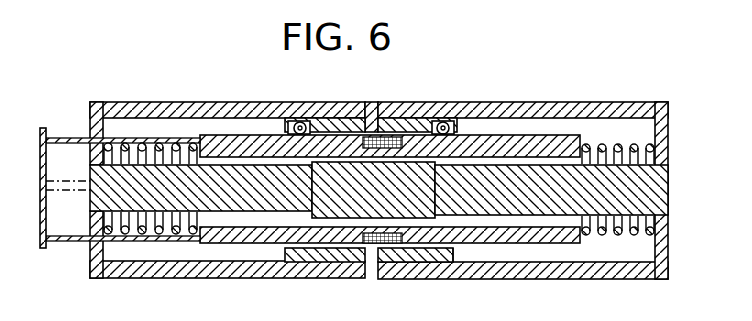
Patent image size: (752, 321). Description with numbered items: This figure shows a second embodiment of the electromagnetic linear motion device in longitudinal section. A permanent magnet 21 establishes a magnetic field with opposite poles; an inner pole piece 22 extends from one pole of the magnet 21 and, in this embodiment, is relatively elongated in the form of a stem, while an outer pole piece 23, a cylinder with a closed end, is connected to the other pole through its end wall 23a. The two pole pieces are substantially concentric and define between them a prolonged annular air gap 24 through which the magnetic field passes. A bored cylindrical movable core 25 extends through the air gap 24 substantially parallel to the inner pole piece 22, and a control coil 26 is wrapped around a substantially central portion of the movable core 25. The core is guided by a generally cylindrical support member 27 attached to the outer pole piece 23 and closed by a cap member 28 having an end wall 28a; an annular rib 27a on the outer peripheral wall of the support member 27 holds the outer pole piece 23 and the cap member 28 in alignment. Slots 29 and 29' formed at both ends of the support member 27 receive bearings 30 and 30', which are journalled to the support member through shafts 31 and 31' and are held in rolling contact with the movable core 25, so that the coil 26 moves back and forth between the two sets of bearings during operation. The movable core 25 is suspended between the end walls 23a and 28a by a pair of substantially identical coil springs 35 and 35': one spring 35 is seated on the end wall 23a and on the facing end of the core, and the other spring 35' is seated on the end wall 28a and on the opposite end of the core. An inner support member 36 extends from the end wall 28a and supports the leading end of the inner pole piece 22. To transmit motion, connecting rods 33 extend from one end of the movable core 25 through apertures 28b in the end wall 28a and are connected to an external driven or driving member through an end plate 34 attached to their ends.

The permanent magnet 21 is at (584, 203).
The inner pole piece 22 is at (389, 206).
The outer pole piece 23 is at (542, 281).
The end wall 23a is at (669, 254).
The air gap 24 is at (457, 249).
The movable core 25 is at (268, 227).
The control coil 26 is at (391, 233).
The support member 27 is at (328, 258).
The annular rib 27a is at (358, 268).
The cap member 28 is at (223, 279).
The end wall 28a is at (92, 258).
The apertures 28b is at (89, 133).
The slots 29 is at (308, 102).
The slots 29' is at (417, 103).
The bearings 30 is at (325, 94).
The bearings 30' is at (469, 96).
The shafts 31 is at (306, 103).
The shafts 31' is at (446, 105).
The connecting rods 33 is at (68, 137).
The end plate 34 is at (38, 220).
The coil spring 35 is at (618, 156).
The coil spring 35' is at (150, 226).
The inner support member 36 is at (235, 201).